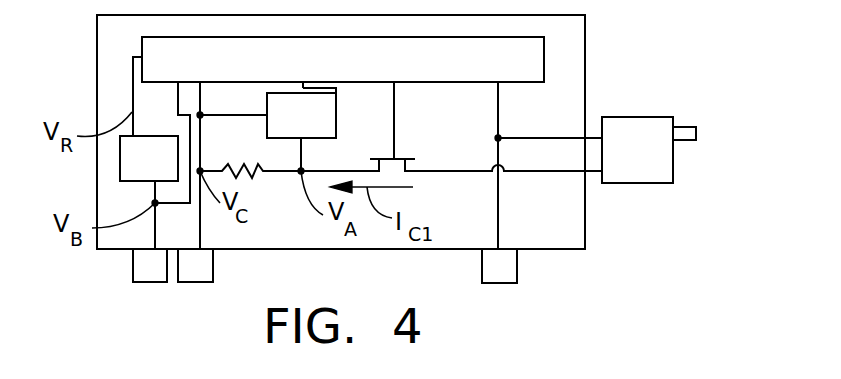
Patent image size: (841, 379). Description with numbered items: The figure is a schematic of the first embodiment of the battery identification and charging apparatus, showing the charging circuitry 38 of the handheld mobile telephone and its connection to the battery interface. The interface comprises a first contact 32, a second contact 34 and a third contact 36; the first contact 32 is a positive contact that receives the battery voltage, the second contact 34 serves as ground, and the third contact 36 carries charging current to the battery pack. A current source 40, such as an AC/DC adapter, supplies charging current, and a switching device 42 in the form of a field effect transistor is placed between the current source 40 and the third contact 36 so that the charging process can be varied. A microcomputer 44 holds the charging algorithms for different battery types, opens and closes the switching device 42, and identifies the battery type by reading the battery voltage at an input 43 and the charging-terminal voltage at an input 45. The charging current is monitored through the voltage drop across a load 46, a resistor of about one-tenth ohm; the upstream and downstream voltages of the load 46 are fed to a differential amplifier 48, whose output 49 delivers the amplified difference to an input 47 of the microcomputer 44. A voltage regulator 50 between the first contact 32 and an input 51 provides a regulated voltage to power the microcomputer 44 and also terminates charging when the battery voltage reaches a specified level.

The first contact 32 is at (130, 268).
The second contact 34 is at (488, 265).
The third contact 36 is at (205, 260).
The charging circuitry 38 is at (555, 102).
The current source 40 is at (642, 175).
The switching device 42 is at (400, 154).
The input 43 is at (178, 82).
The microcomputer 44 is at (533, 60).
The input 45 is at (200, 82).
The load 46 is at (262, 172).
The input 47 is at (303, 82).
The differential amplifier 48 is at (318, 118).
The output 49 is at (336, 88).
The voltage regulator 50 is at (128, 168).
The input 51 is at (143, 58).